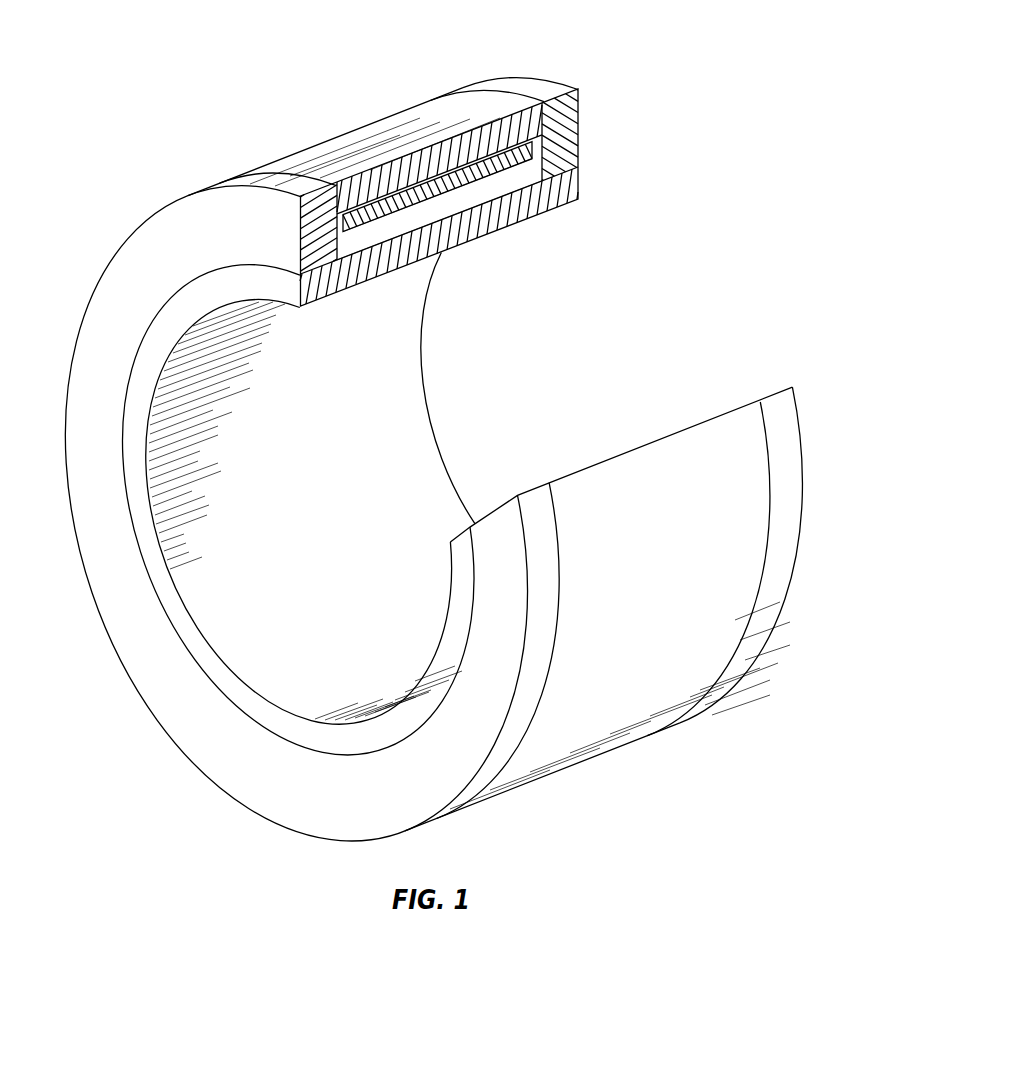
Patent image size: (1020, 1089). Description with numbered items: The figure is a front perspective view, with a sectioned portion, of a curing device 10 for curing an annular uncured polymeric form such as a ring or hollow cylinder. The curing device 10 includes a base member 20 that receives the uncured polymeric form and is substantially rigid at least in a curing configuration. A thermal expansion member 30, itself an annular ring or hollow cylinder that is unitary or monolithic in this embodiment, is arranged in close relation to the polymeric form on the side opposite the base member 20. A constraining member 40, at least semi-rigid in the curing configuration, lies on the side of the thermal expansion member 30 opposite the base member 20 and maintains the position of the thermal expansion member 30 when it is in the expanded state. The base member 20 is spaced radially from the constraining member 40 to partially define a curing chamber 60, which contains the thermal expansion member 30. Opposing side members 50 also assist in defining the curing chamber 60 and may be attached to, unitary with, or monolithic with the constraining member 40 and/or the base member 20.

The curing device 10 is at (717, 71).
The base member 20 is at (363, 282).
The thermal expansion member 30 is at (487, 173).
The constraining member 40 is at (372, 137).
The side members 50 is at (262, 180).
The curing chamber 60 is at (447, 210).